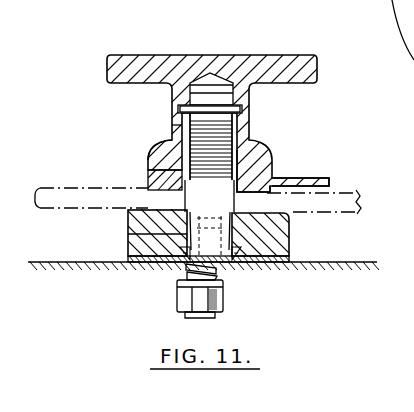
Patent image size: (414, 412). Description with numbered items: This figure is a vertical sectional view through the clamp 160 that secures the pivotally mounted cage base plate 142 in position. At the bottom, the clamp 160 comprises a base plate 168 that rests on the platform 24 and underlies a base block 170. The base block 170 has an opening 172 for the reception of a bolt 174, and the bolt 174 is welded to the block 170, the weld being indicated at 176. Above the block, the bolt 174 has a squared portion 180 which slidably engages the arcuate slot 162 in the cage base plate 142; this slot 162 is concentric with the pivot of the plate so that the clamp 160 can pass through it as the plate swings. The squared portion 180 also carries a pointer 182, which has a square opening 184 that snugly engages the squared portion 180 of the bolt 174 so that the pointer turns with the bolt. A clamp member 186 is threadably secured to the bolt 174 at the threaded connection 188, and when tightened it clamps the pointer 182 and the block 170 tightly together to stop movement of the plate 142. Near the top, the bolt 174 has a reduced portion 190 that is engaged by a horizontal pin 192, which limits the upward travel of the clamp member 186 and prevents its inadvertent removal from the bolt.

The clamp 160 is at (78, 78).
The clamp member 186 is at (275, 62).
The reduced portion 190 is at (215, 100).
The horizontal pin 192 is at (249, 105).
The bolt 174 is at (234, 141).
The threaded connection 188 is at (182, 130).
The squared portion 180 is at (152, 160).
The square opening 184 is at (250, 177).
The pointer 182 is at (312, 178).
The arcuate slot 162 is at (180, 200).
The base plate 142 is at (352, 196).
The opening 172 is at (134, 232).
The base block 170 is at (277, 239).
The base plate 168 is at (275, 264).
The platform 24 is at (70, 259).
The weld 176 is at (172, 270).